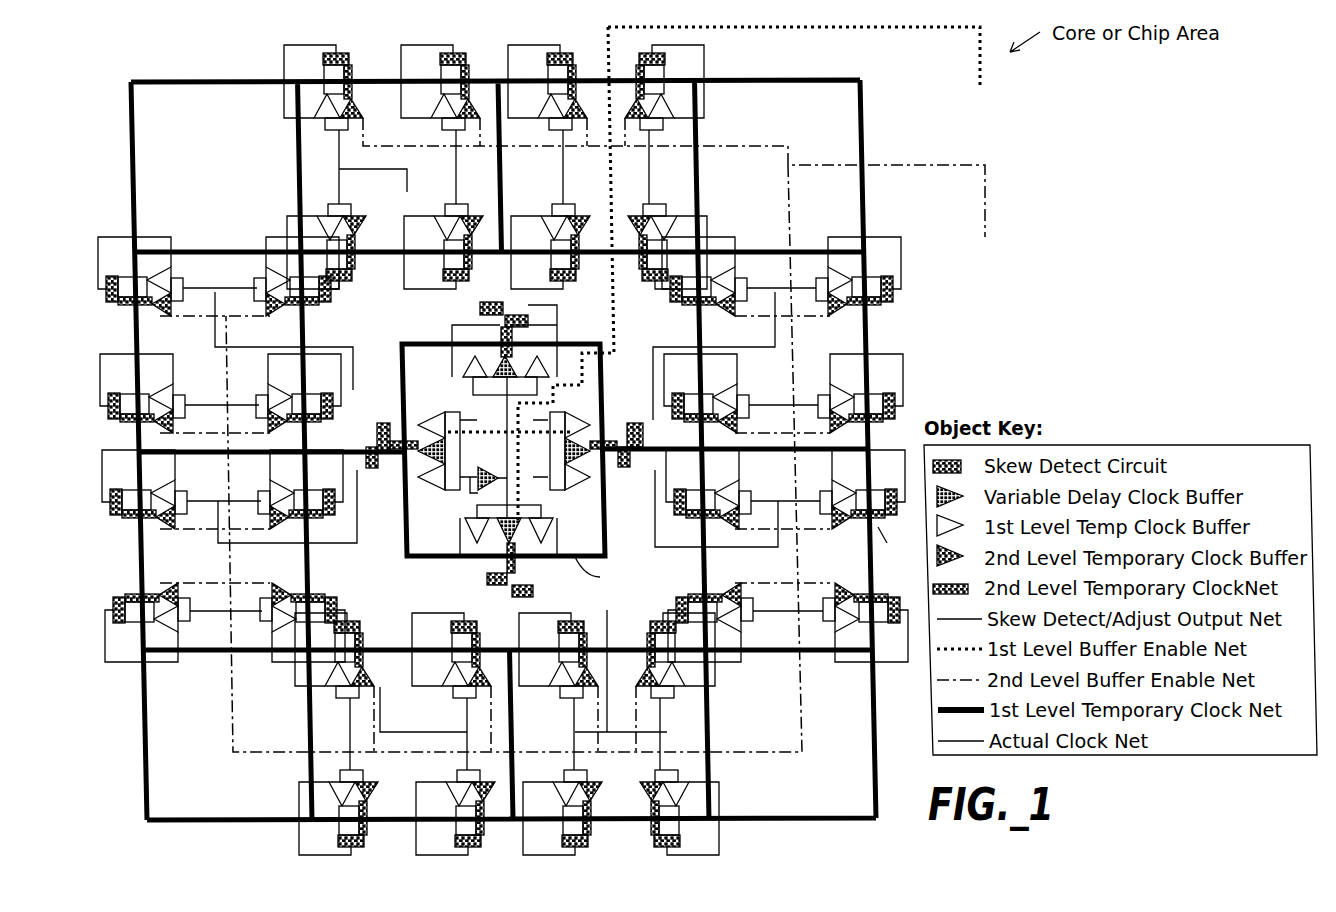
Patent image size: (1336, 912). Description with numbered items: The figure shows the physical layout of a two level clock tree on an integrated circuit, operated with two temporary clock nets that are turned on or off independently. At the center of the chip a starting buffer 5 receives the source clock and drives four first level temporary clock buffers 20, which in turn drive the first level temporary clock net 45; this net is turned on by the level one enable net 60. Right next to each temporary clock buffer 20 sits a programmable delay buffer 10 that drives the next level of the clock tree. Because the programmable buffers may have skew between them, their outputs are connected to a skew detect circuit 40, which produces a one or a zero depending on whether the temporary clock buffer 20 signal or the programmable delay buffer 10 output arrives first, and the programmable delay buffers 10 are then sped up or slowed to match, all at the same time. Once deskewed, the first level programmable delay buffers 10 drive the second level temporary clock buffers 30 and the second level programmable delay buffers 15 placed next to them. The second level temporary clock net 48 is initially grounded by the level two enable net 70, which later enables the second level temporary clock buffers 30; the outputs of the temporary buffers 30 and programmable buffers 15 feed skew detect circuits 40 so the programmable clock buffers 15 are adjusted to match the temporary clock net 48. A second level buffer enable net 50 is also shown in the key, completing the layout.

The starting buffer 5 is at (494, 468).
The programmable delay buffer 10 is at (462, 370).
The second level programmable delay buffer 15 is at (316, 222).
The first level temporary clock buffer 20 is at (515, 400).
The second level temporary clock buffer 30 is at (360, 80).
The skew detect circuit 40 is at (350, 55).
The first level temporary clock net 45 is at (602, 571).
The second level temporary clock net 48 is at (888, 543).
The second level buffer enable net 50 is at (890, 268).
The level 1 enable net 60 is at (829, 79).
The level 2 enable net 70 is at (984, 262).